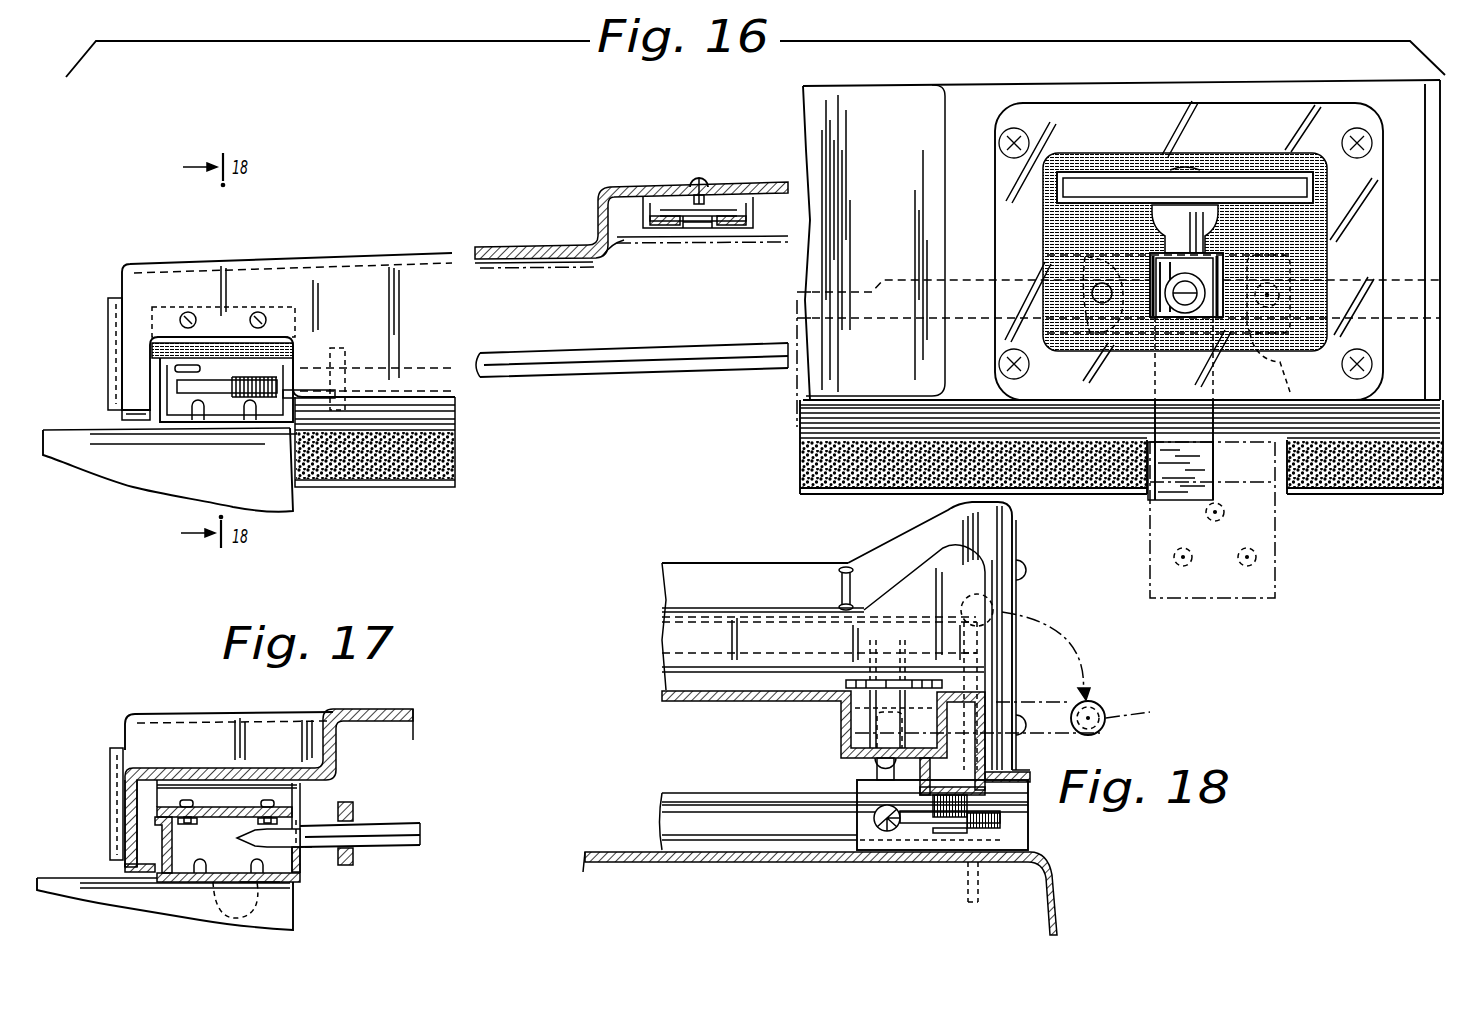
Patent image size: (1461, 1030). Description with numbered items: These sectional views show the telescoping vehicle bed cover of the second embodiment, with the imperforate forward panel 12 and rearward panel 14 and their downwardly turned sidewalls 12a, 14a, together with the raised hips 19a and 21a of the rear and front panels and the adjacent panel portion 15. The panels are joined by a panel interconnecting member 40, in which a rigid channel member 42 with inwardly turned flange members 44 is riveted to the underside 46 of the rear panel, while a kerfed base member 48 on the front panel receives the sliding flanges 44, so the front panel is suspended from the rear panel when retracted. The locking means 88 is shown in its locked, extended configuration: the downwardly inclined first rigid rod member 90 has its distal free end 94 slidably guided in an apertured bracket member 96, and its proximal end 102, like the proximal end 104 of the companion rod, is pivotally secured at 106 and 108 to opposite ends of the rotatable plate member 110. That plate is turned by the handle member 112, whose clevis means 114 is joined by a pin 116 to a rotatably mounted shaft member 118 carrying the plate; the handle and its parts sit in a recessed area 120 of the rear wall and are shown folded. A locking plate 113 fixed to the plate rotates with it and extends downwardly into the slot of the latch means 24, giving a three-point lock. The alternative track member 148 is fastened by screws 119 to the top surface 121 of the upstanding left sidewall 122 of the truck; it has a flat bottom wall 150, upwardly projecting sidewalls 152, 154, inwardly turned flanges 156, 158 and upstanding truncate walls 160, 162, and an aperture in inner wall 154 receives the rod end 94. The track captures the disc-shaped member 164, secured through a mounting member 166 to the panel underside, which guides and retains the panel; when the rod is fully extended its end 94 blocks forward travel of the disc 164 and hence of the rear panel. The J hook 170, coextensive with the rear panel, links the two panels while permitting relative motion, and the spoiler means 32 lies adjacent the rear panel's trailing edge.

In FIG. 17, the forward panel 12 is at (258, 768).
In FIG. 17, the sidewall of front panel 12a is at (125, 813).
In FIG. 16, the rearward panel 14 is at (176, 262).
In FIG. 17, the rearward panel 14 is at (180, 713).
In FIG. 18, the rearward panel 14 is at (706, 566).
In FIG. 16, the sidewall of rear panel 14a is at (108, 337).
In FIG. 17, the sidewall of rear panel 14a is at (110, 783).
In FIG. 16, the body pillar panel 15 is at (818, 108).
In FIG. 18, the body pillar panel 15 is at (988, 566).
In FIG. 16, the raised hip 19a is at (597, 215).
In FIG. 16, the raised hip 21a is at (611, 252).
In FIG. 16, the latch means 24 is at (1278, 548).
In FIG. 18, the spoiler means 32 is at (888, 551).
In FIG. 16, the panel interconnecting member 40 is at (631, 219).
In FIG. 16, the channel member 42 is at (642, 206).
In FIG. 16, the flange members 44 is at (660, 231).
In FIG. 18, the underside of rear panel 46 is at (735, 702).
In FIG. 16, the base member 48 is at (697, 233).
In FIG. 16, the locking means 88 is at (1347, 112).
In FIG. 16, the first rigid rod member 90 is at (406, 368).
In FIG. 17, the first rigid rod member 90 is at (418, 845).
In FIG. 18, the first rigid rod member 90 is at (874, 766).
In FIG. 16, the distal free end of rod member 94 is at (277, 421).
In FIG. 17, the distal free end of rod member 94 is at (311, 848).
In FIG. 18, the distal free end of rod member 94 is at (876, 810).
In FIG. 16, the bracket member 96 is at (343, 348).
In FIG. 17, the bracket member 96 is at (354, 805).
In FIG. 16, the proximal end of rod member 102 is at (896, 326).
In FIG. 16, the proximal end of rod member 104 is at (1300, 300).
In FIG. 16, the pivot 106 is at (1085, 265).
In FIG. 16, the pivot 108 is at (1292, 288).
In FIG. 16, the rotatable plate member 110 is at (1295, 370).
In FIG. 16, the handle member 112 is at (1139, 184).
In FIG. 18, the handle member 112 is at (997, 610).
In FIG. 16, the locking plate 113 is at (1216, 396).
In FIG. 18, the locking plate 113 is at (966, 876).
In FIG. 16, the clevis means 114 is at (1226, 246).
In FIG. 18, the clevis means 114 is at (996, 672).
In FIG. 16, the pin 116 is at (1158, 298).
In FIG. 16, the shaft member 118 is at (1181, 313).
In FIG. 17, the screws 119 is at (253, 920).
In FIG. 16, the recessed area 120 is at (1290, 168).
In FIG. 16, the top surface of sidewall 121 is at (88, 426).
In FIG. 17, the top surface of sidewall 121 is at (92, 878).
In FIG. 18, the top surface of sidewall 121 is at (602, 852).
In FIG. 16, the left sidewall 122 is at (160, 476).
In FIG. 17, the left sidewall 122 is at (297, 890).
In FIG. 16, the alternative track member 148 is at (163, 422).
In FIG. 17, the alternative track member 148 is at (174, 878).
In FIG. 17, the flat bottom wall 150 is at (258, 884).
In FIG. 17, the sidewall of track member 152 is at (160, 865).
In FIG. 17, the inner vertical wall of track member 154 is at (300, 868).
In FIG. 16, the inwardly-turned flange 156 is at (187, 367).
In FIG. 17, the inwardly-turned flange 156 is at (199, 824).
In FIG. 17, the inwardly-turned flange 158 is at (263, 809).
In FIG. 16, the upstanding truncate wall 160 is at (198, 419).
In FIG. 17, the upstanding truncate wall 160 is at (200, 875).
In FIG. 16, the upstanding truncate wall 162 is at (250, 419).
In FIG. 17, the upstanding truncate wall 162 is at (262, 878).
In FIG. 16, the disc-shaped member 164 is at (252, 377).
In FIG. 17, the disc-shaped member 164 is at (297, 832).
In FIG. 18, the disc-shaped member 164 is at (918, 818).
In FIG. 18, the mounting member 166 is at (992, 772).
In FIG. 16, the J hook 170 is at (128, 421).
In FIG. 17, the J hook 170 is at (123, 757).